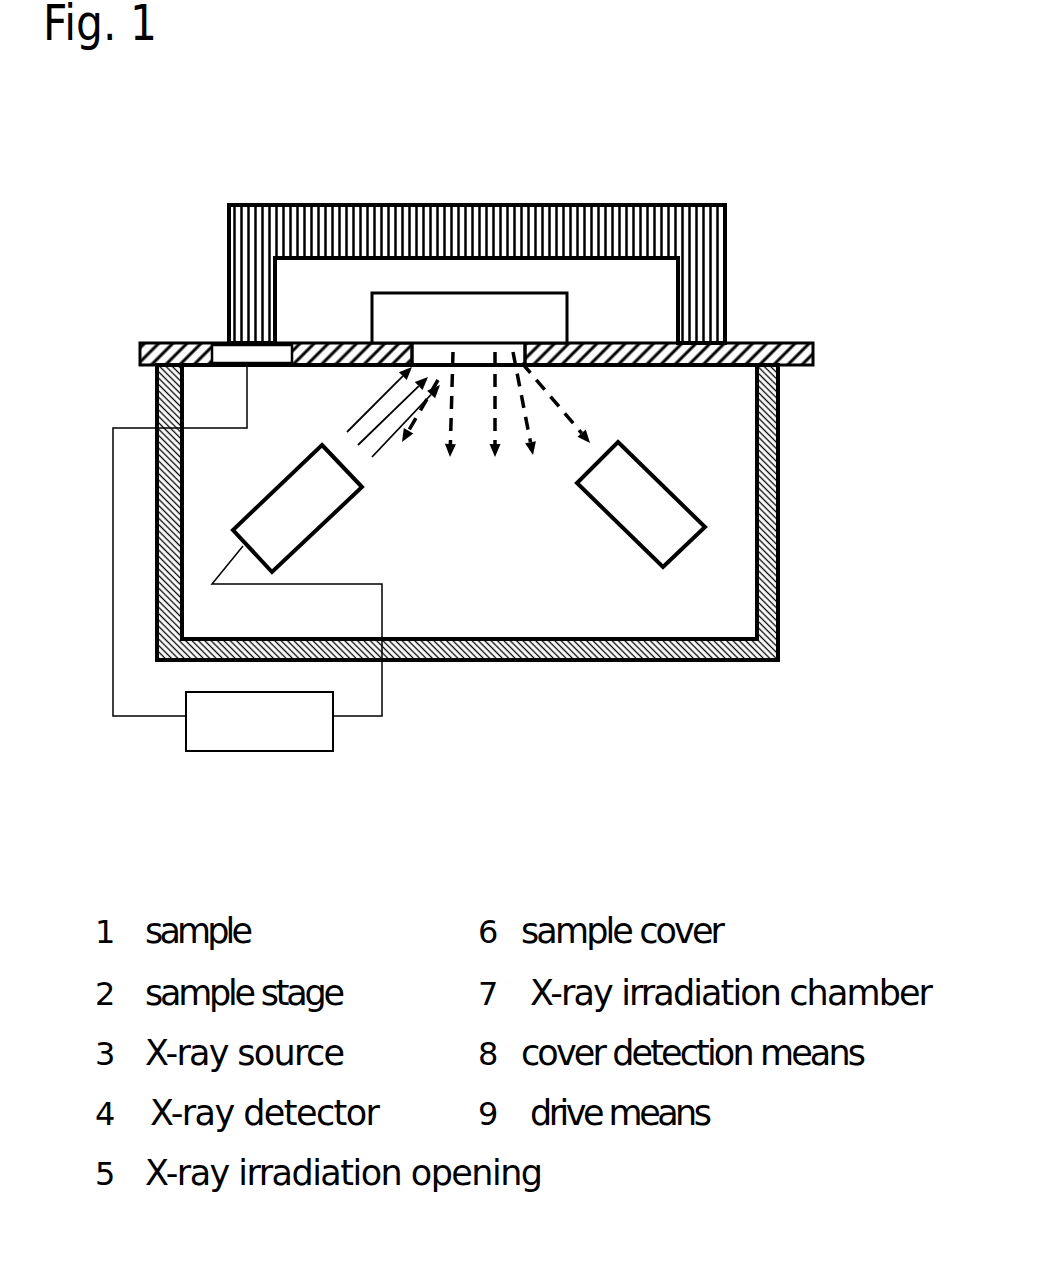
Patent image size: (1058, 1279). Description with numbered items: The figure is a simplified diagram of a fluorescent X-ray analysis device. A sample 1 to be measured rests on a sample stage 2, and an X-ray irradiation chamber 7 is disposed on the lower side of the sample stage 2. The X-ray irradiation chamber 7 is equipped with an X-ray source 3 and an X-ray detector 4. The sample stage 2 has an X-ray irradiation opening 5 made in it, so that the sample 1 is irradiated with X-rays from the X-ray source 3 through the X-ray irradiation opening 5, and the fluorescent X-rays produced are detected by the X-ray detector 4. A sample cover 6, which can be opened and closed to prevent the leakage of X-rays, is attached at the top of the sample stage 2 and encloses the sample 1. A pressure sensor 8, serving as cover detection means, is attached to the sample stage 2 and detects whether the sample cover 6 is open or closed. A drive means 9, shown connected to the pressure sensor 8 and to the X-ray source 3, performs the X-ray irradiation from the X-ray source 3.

The sample 1 is at (543, 306).
The sample stage 2 is at (617, 343).
The X-ray source 3 is at (297, 513).
The X-ray detector 4 is at (653, 512).
The X-ray irradiation opening 5 is at (433, 355).
The sample cover 6 is at (373, 235).
The X-ray irradiation chamber 7 is at (653, 608).
The pressure sensor (cover detection means) 8 is at (237, 355).
The drive means 9 is at (246, 739).